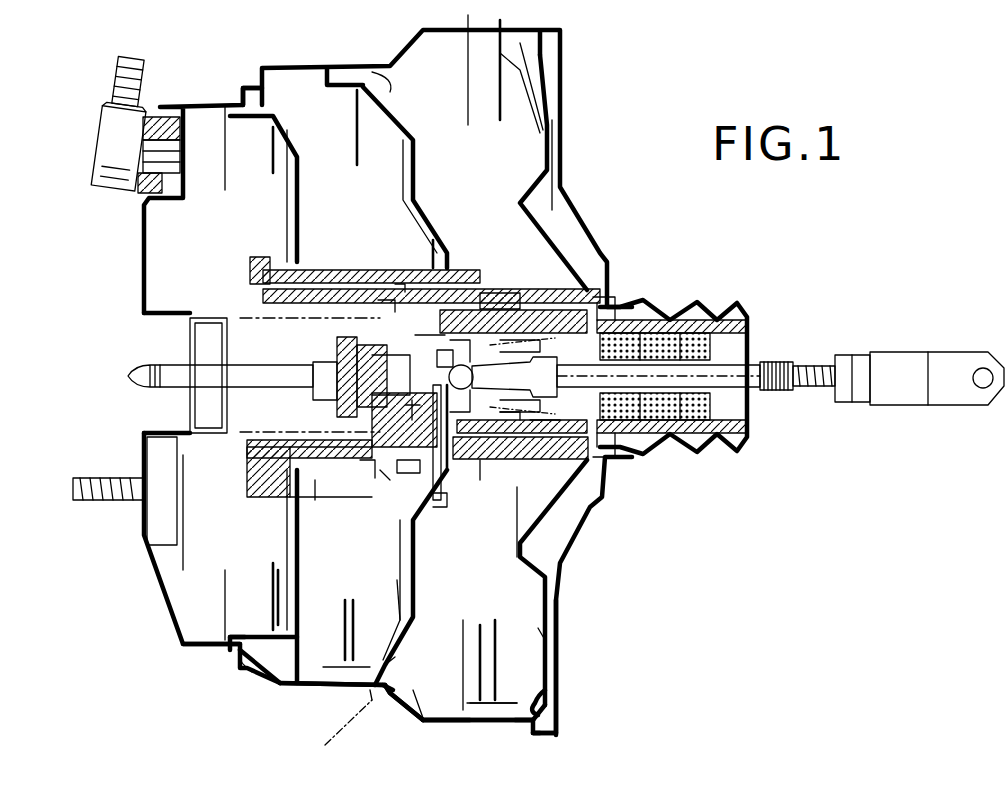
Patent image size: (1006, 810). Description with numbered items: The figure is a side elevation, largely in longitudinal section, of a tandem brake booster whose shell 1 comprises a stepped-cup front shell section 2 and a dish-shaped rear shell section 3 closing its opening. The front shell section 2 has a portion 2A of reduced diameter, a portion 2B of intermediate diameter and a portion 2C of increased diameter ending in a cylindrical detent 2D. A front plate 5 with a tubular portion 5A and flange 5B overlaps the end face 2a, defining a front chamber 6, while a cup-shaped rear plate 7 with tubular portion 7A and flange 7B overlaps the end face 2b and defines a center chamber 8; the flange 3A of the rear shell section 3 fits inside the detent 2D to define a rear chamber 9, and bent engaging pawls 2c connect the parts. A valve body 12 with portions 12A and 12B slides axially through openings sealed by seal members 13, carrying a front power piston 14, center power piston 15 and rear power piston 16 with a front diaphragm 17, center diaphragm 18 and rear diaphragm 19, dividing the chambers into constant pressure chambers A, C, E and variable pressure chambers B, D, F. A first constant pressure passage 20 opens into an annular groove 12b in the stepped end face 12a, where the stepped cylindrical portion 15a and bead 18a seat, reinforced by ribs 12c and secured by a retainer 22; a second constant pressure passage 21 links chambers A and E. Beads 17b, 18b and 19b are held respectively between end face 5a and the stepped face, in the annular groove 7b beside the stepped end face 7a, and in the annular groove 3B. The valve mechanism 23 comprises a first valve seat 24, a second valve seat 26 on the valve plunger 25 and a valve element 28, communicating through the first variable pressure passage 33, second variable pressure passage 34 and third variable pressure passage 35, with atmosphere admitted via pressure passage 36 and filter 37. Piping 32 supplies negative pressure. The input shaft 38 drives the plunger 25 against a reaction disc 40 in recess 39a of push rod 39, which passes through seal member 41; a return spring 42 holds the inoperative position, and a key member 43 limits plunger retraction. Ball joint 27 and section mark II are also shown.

The shell 1 is at (400, 720).
The front shell section 2 is at (290, 697).
The portion of reduced diameter 2A is at (206, 648).
The portion of intermediate diameter 2B is at (318, 690).
The portion of increased diameter 2C is at (460, 722).
The cylindrical detent 2D is at (545, 735).
The end face 2a is at (372, 708).
The end face 2b is at (522, 722).
The engaging pawls / stepped end face 2c is at (548, 42).
The rear shell section 3 is at (566, 578).
The flange 3A is at (556, 723).
The annular groove 3B is at (542, 700).
The front plate 5 is at (292, 622).
The tubular portion 5A is at (291, 682).
The flange 5B is at (394, 690).
The end face 5a is at (272, 685).
The front chamber 6 is at (251, 182).
The rear plate 7 is at (413, 602).
The tubular portion 7A is at (440, 717).
The flange 7B is at (536, 735).
The stepped end face 7a is at (427, 732).
The annular groove 7b is at (396, 656).
The center chamber 8 is at (341, 162).
The rear chamber 9 is at (450, 107).
The valve body 12 is at (240, 488).
The portion of increased diameter 12A is at (340, 268).
The portion of intermediate diameter 12B is at (510, 296).
The stepped end face 12a is at (400, 282).
The annular groove 12b is at (418, 370).
The reinforcing ribs 12c is at (657, 300).
The seal members 13 is at (315, 490).
The front power piston 14 is at (280, 596).
The center power piston 15 is at (398, 586).
The stepped cylindrical portion 15a is at (395, 290).
The rear power piston 16 is at (541, 636).
The front diaphragm 17 is at (241, 633).
The bead 17b is at (250, 672).
The center diaphragm 18 is at (345, 659).
The bead 18a is at (441, 337).
The bead 18b is at (372, 697).
The rear diaphragm 19 is at (480, 701).
The bead 19b is at (483, 725).
The first constant pressure passage 20 is at (245, 296).
The second constant pressure passage 21 is at (473, 300).
The retainer 22 is at (433, 252).
The valve mechanism 23 is at (541, 446).
The first valve seat 24 is at (461, 293).
The valve plunger 25 is at (316, 392).
The second valve seat 26 is at (486, 426).
The ball joint 27 is at (556, 380).
The valve element 28 is at (522, 324).
The piping 32 is at (125, 90).
The first variable pressure passage 33 is at (464, 474).
The second variable pressure passage 34 is at (369, 479).
The third variable pressure passage 35 is at (508, 441).
The pressure passage 36 is at (606, 452).
The filter 37 is at (673, 347).
The input shaft 38 is at (724, 371).
The push rod 39 is at (172, 368).
The recess 39a is at (336, 362).
The reaction disc 40 is at (341, 408).
The seal member 41 is at (194, 406).
The return spring 42 is at (248, 322).
The key member 43 is at (441, 505).
The constant pressure chamber A is at (207, 206).
The variable pressure chamber B is at (268, 108).
The constant pressure chamber C is at (350, 186).
The variable pressure chamber D is at (343, 76).
The constant pressure chamber E is at (460, 151).
The variable pressure chamber F is at (549, 106).
The section line II is at (337, 734).